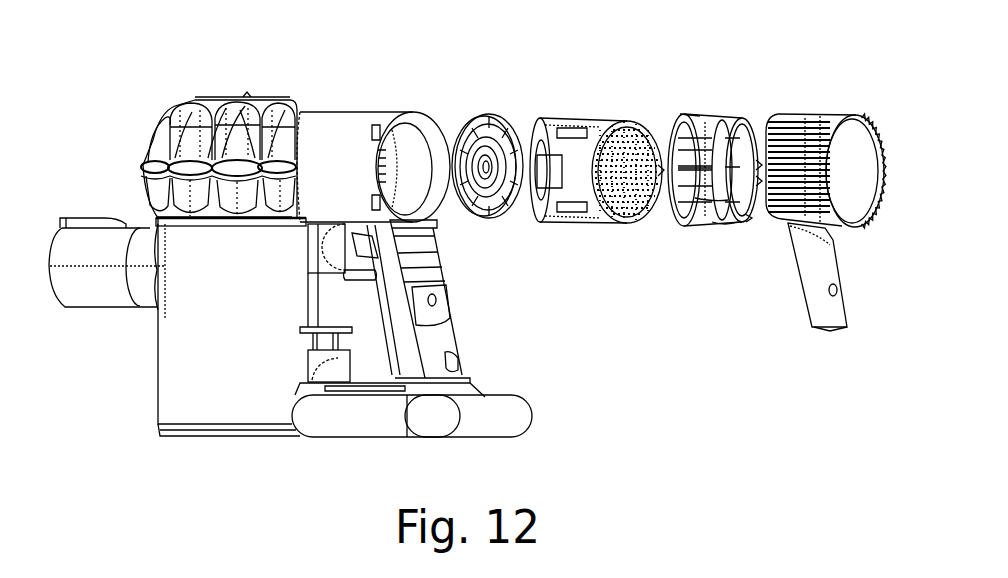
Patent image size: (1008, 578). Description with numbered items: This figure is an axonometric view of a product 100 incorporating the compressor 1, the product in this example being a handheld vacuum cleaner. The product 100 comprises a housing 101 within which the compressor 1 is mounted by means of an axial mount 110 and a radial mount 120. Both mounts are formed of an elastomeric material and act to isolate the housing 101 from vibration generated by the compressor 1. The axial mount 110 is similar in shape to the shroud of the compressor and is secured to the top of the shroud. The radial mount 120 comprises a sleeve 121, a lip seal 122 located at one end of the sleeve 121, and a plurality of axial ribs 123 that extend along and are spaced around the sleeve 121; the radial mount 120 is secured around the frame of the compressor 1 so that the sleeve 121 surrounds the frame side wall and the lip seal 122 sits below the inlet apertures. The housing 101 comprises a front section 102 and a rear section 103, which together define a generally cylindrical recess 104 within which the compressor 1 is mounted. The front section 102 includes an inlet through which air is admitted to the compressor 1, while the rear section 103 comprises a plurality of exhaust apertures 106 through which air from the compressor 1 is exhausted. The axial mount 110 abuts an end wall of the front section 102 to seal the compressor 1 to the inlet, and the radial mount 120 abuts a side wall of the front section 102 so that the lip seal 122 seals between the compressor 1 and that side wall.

The product 100 is at (170, 58).
The housing 101 is at (248, 97).
The front section 102 is at (368, 112).
The cylindrical recess 104 is at (436, 210).
The axial mount 110 is at (492, 113).
The compressor 1 is at (597, 120).
The radial mount 120 is at (717, 115).
The sleeve 121 is at (695, 204).
The lip seal 122 is at (680, 124).
The axial ribs 123 is at (718, 225).
The rear section 103 is at (825, 115).
The exhaust apertures 106 is at (786, 213).